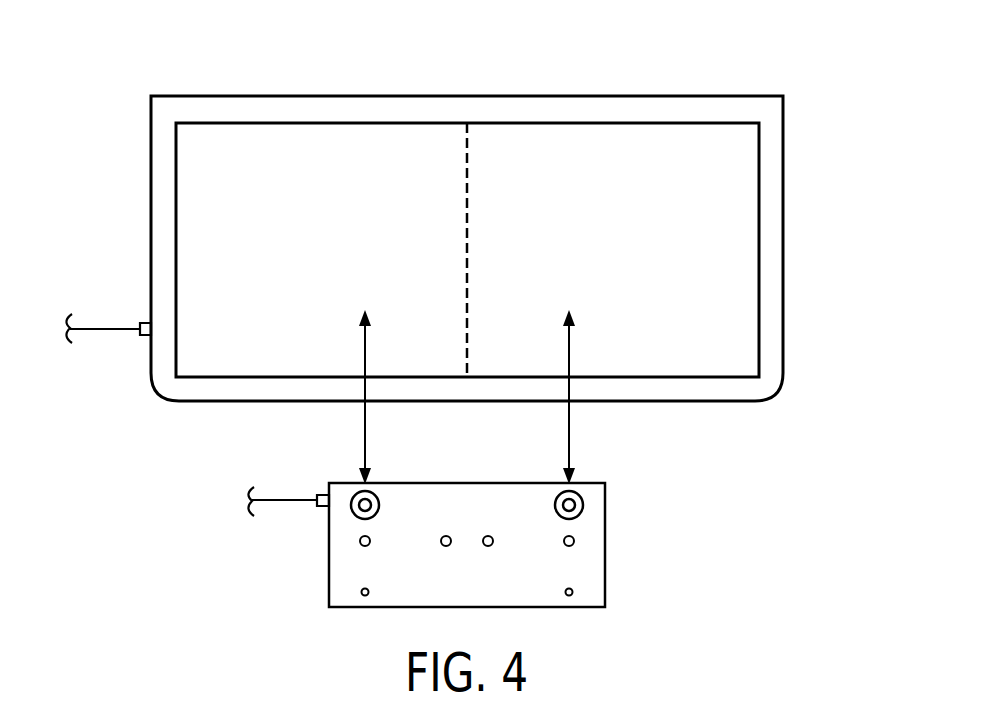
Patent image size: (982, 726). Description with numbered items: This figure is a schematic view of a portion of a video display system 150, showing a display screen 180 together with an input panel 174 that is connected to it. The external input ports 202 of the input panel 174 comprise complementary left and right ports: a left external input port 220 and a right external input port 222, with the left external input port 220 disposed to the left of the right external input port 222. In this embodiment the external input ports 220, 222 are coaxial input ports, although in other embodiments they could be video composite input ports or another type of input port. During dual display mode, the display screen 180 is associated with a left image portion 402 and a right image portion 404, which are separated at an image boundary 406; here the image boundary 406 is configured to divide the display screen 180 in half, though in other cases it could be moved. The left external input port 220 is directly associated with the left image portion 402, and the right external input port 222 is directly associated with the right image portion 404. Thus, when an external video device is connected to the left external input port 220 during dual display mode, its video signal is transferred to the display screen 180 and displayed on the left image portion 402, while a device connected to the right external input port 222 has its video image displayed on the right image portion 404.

The display system 150 is at (90, 220).
The display screen 180 is at (630, 121).
The left image portion 402 is at (317, 165).
The right image portion 404 is at (718, 204).
The image boundary 406 is at (467, 216).
The input panel 174 is at (606, 594).
The left external input port 220 is at (354, 514).
The right external input port 222 is at (580, 495).
The external input ports 202 is at (578, 534).